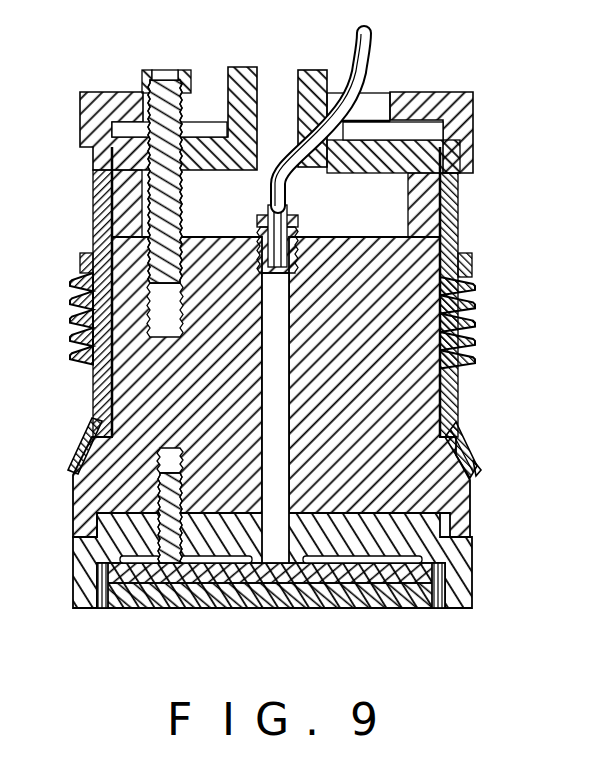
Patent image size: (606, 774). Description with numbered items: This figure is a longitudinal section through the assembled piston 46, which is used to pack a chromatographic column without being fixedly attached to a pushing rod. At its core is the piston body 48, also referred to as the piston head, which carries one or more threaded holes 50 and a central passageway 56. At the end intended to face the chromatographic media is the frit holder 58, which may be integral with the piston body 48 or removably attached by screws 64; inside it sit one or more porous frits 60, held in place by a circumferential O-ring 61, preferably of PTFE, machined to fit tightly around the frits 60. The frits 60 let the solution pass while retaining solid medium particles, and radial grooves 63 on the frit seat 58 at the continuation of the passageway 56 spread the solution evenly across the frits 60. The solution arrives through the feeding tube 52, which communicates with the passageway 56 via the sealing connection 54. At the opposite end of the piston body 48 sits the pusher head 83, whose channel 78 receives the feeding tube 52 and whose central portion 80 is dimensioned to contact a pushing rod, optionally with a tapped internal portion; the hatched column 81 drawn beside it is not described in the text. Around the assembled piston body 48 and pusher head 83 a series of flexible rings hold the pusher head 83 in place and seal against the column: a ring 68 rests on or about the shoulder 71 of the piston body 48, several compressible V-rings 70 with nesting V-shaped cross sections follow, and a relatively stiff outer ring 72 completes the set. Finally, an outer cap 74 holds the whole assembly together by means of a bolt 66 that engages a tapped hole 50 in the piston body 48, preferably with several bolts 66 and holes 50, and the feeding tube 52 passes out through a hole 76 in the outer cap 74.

The piston 46 is at (502, 262).
The piston body 48 is at (466, 492).
The threaded hole 50 is at (92, 388).
The feeding tube 52 is at (372, 50).
The sealing connection 54 is at (259, 232).
The passageway 56 is at (270, 313).
The frit holder 58 is at (73, 590).
The porous frit 60 is at (149, 608).
The O-ring 61 is at (98, 607).
The radial groove 63 is at (222, 563).
The screw 64 is at (158, 495).
The bolt 66 is at (188, 70).
The ring 68 is at (462, 420).
The V-ring 70 is at (477, 361).
The shoulder 71 is at (481, 470).
The outer ring 72 is at (462, 198).
The outer cap 74 is at (462, 95).
The hole 76 is at (380, 100).
The channel 78 is at (333, 170).
The central portion 80 is at (313, 70).
The bracket 81 is at (257, 92).
The pusher head 83 is at (478, 146).